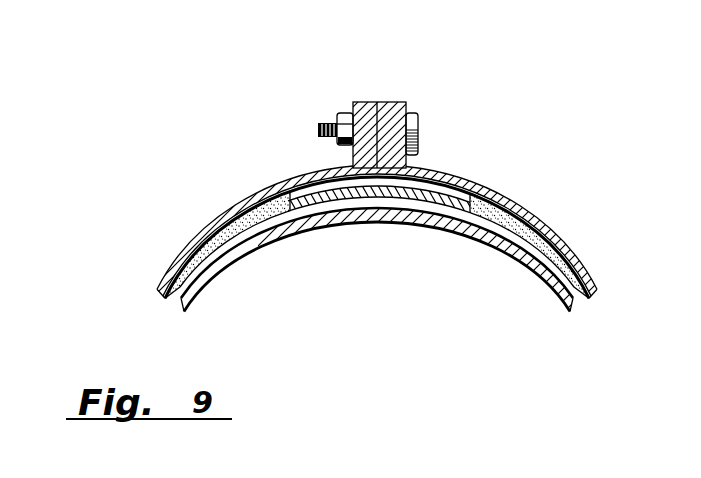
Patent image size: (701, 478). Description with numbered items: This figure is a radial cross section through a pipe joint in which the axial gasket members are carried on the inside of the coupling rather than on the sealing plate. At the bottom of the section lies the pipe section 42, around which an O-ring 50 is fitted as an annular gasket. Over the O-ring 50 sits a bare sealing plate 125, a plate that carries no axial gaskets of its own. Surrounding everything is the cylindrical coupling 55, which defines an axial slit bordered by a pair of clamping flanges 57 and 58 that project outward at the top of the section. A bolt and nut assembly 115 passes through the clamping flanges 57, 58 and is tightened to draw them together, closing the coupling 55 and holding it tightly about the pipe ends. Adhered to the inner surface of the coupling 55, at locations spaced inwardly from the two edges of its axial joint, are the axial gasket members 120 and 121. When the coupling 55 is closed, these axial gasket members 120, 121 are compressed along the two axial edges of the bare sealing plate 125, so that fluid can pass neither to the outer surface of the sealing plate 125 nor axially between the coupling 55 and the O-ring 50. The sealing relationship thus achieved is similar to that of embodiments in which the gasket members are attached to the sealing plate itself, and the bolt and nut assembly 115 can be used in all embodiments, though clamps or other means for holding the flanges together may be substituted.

The pipe section 42 is at (518, 262).
The O-ring 50 is at (396, 222).
The cylindrical coupling 55 is at (318, 174).
The clamping flange 57 is at (398, 101).
The clamping flange 58 is at (352, 108).
The bolt and nut assembly 115 is at (418, 138).
The axial gasket member 120 is at (522, 206).
The axial gasket member 121 is at (222, 212).
The bare sealing plate 125 is at (320, 210).